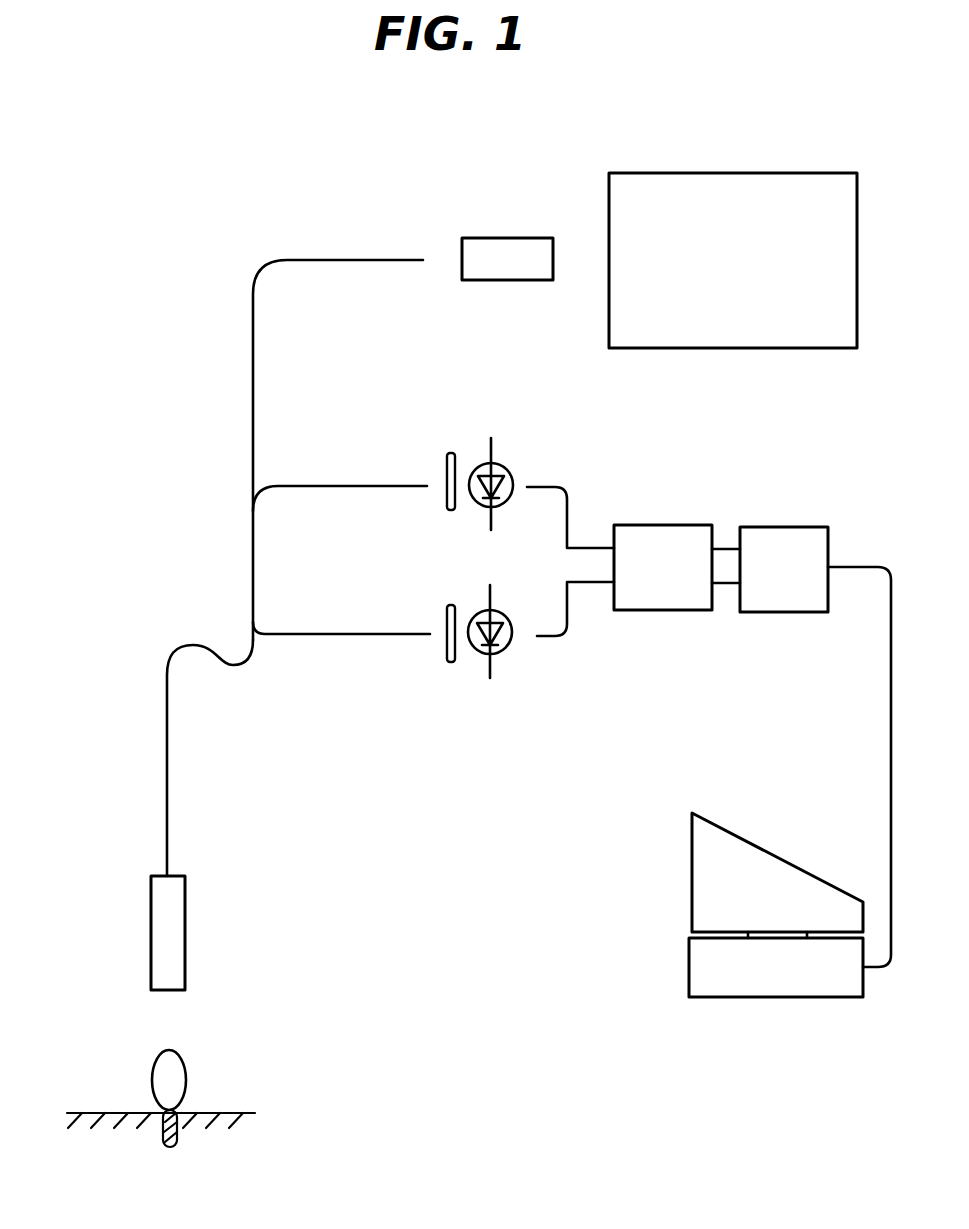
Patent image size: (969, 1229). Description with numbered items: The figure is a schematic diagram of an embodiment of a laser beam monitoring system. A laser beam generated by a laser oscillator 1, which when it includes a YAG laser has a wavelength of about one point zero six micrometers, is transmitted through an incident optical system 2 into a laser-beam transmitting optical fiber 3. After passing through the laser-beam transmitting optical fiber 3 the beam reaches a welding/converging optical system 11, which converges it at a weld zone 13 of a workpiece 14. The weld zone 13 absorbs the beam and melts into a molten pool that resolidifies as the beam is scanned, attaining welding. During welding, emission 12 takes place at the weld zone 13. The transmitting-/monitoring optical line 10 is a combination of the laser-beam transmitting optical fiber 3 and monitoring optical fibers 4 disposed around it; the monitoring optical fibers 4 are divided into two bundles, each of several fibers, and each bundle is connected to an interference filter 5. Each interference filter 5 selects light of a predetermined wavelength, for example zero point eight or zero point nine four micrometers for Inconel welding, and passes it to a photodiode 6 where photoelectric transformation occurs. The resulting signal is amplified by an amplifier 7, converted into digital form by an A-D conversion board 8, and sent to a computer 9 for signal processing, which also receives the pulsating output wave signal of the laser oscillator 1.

The laser oscillator 1 is at (713, 173).
The incident optical system 2 is at (490, 238).
The laser-beam transmitting optical fiber 3 is at (289, 259).
The monitoring optical fibers 4 is at (310, 485).
The interference filter 5 is at (451, 452).
The photodiode 6 is at (508, 471).
The amplifier 7 is at (661, 525).
The A-D conversion board 8 is at (790, 527).
The computer 9 is at (712, 830).
The transmitting-/monitoring optical line 10 is at (170, 786).
The welding/converging optical system 11 is at (178, 938).
The emission 12 is at (182, 1077).
The weld zone 13 is at (176, 1133).
The workpiece 14 is at (127, 1127).